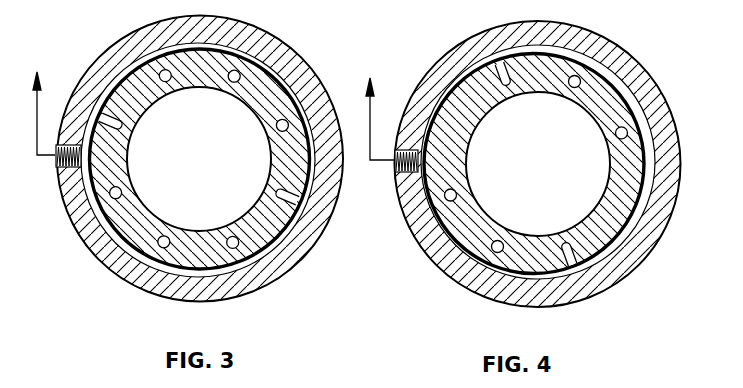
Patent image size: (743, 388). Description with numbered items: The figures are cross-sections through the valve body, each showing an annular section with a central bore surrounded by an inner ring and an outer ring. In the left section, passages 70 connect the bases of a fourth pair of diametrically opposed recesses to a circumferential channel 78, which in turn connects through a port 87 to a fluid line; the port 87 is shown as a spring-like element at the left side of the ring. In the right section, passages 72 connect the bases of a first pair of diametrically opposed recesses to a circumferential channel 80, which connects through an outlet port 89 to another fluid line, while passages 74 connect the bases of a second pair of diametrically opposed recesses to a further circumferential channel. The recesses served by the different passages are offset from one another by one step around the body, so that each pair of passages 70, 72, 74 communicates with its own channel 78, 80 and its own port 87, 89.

In FIG. 3, the passages 70 is at (288, 199).
In FIG. 3, the passages 72 is at (232, 249).
In FIG. 4, the passages 72 is at (575, 256).
In FIG. 4, the passages 74 is at (498, 252).
In FIG. 3, the circumferential channel 78 is at (283, 236).
In FIG. 4, the circumferential channel 80 is at (652, 182).
In FIG. 3, the port 87 is at (55, 171).
In FIG. 4, the outlet port 89 is at (397, 173).